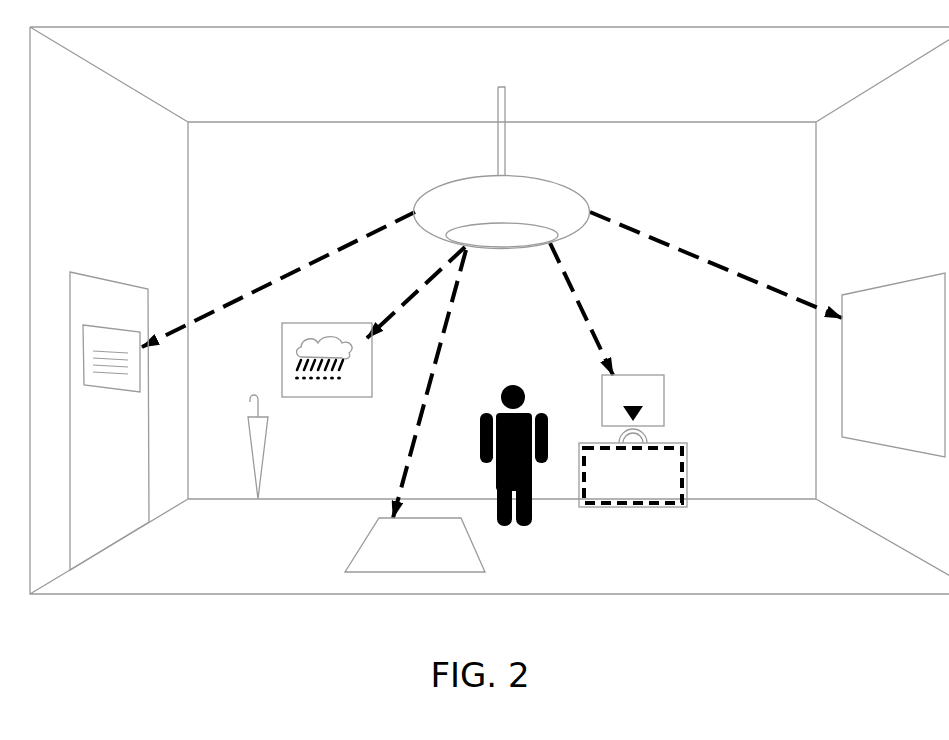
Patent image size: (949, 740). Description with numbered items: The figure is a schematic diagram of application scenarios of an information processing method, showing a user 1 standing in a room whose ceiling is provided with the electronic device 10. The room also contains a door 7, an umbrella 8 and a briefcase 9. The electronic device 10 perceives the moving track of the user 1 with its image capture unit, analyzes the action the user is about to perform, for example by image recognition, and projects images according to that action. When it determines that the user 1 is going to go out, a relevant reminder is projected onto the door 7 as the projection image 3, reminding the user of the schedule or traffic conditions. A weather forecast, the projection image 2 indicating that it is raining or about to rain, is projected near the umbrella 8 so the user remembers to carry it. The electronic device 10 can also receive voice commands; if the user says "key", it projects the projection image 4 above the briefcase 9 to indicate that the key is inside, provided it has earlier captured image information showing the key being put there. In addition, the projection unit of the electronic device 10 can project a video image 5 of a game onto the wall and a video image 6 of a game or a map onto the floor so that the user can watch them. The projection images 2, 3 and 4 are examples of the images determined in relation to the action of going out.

The user 1 is at (505, 388).
The projection image 2 is at (303, 337).
The projection image 3 is at (134, 382).
The projection image 4 is at (650, 378).
The video image 5 is at (922, 307).
The video image 6 is at (365, 567).
The door 7 is at (104, 292).
The umbrella 8 is at (250, 419).
The briefcase 9 is at (666, 460).
The electronic device 10 is at (532, 198).